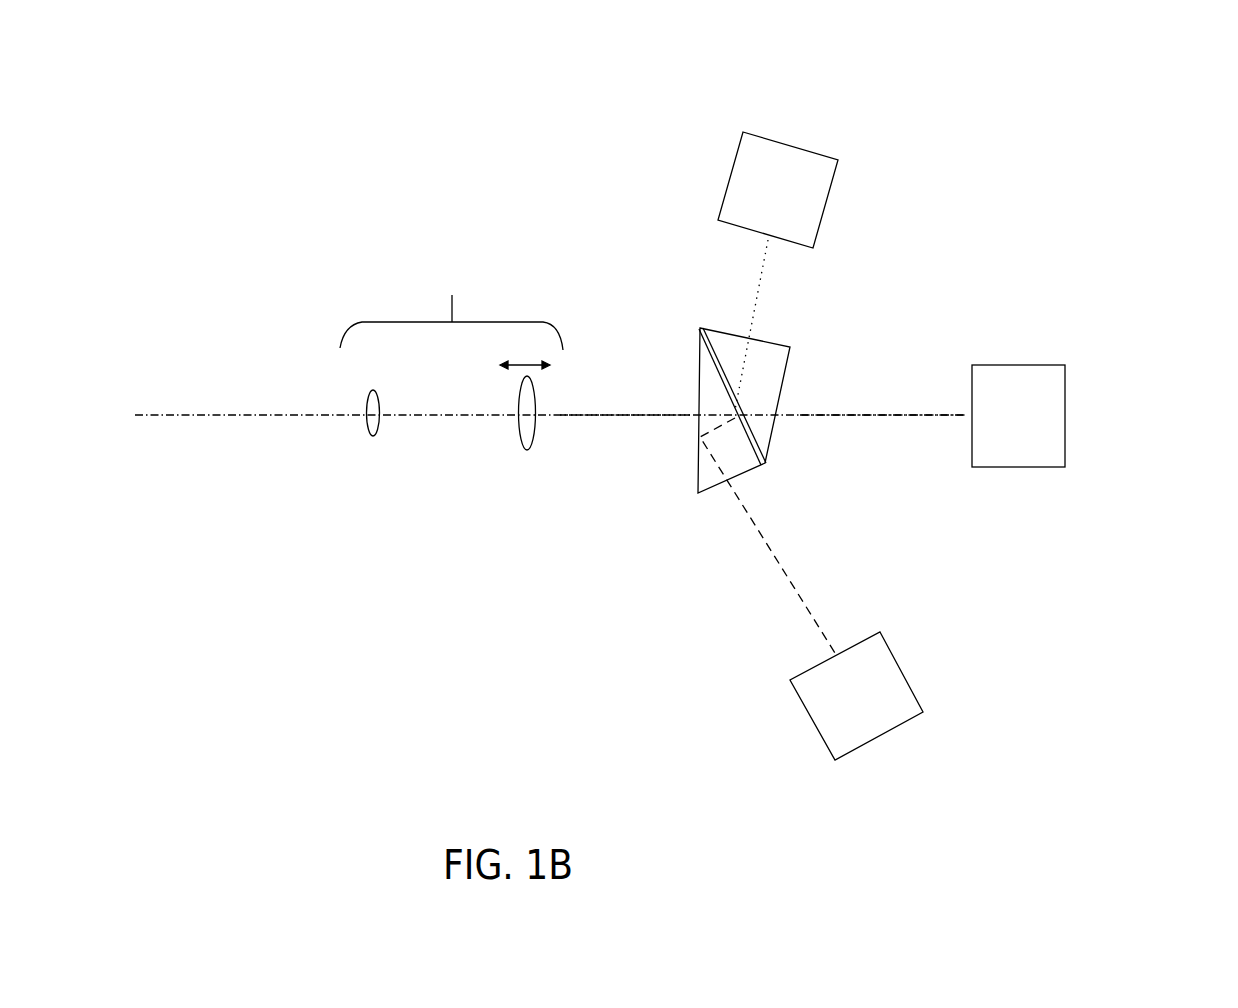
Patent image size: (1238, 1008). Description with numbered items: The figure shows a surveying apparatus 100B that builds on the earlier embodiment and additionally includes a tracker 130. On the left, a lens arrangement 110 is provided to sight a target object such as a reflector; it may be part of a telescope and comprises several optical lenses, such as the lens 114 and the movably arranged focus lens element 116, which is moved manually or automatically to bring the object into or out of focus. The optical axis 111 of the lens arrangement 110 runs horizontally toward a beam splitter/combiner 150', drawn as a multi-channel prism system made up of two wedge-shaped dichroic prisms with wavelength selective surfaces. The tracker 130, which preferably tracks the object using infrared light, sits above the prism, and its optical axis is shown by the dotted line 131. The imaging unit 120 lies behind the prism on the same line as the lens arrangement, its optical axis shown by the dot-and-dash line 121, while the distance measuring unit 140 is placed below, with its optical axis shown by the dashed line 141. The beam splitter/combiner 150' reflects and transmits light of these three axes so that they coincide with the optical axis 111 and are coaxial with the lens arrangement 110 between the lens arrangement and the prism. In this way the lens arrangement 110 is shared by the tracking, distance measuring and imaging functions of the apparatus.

The surveying apparatus 100B is at (443, 108).
The lens arrangement 110 is at (451, 300).
The lens 114 is at (373, 436).
The focus lens element 116 is at (527, 450).
The optical axis of the lens arrangement 111 is at (630, 415).
The beam splitter/combiner 150' is at (794, 410).
The tracker 130 is at (830, 196).
The dotted line 131 is at (752, 296).
The dashed line 141 is at (773, 560).
The distance measuring unit 140 is at (910, 683).
The imaging unit 120 is at (1065, 412).
The dot-and-dash line 121 is at (865, 417).